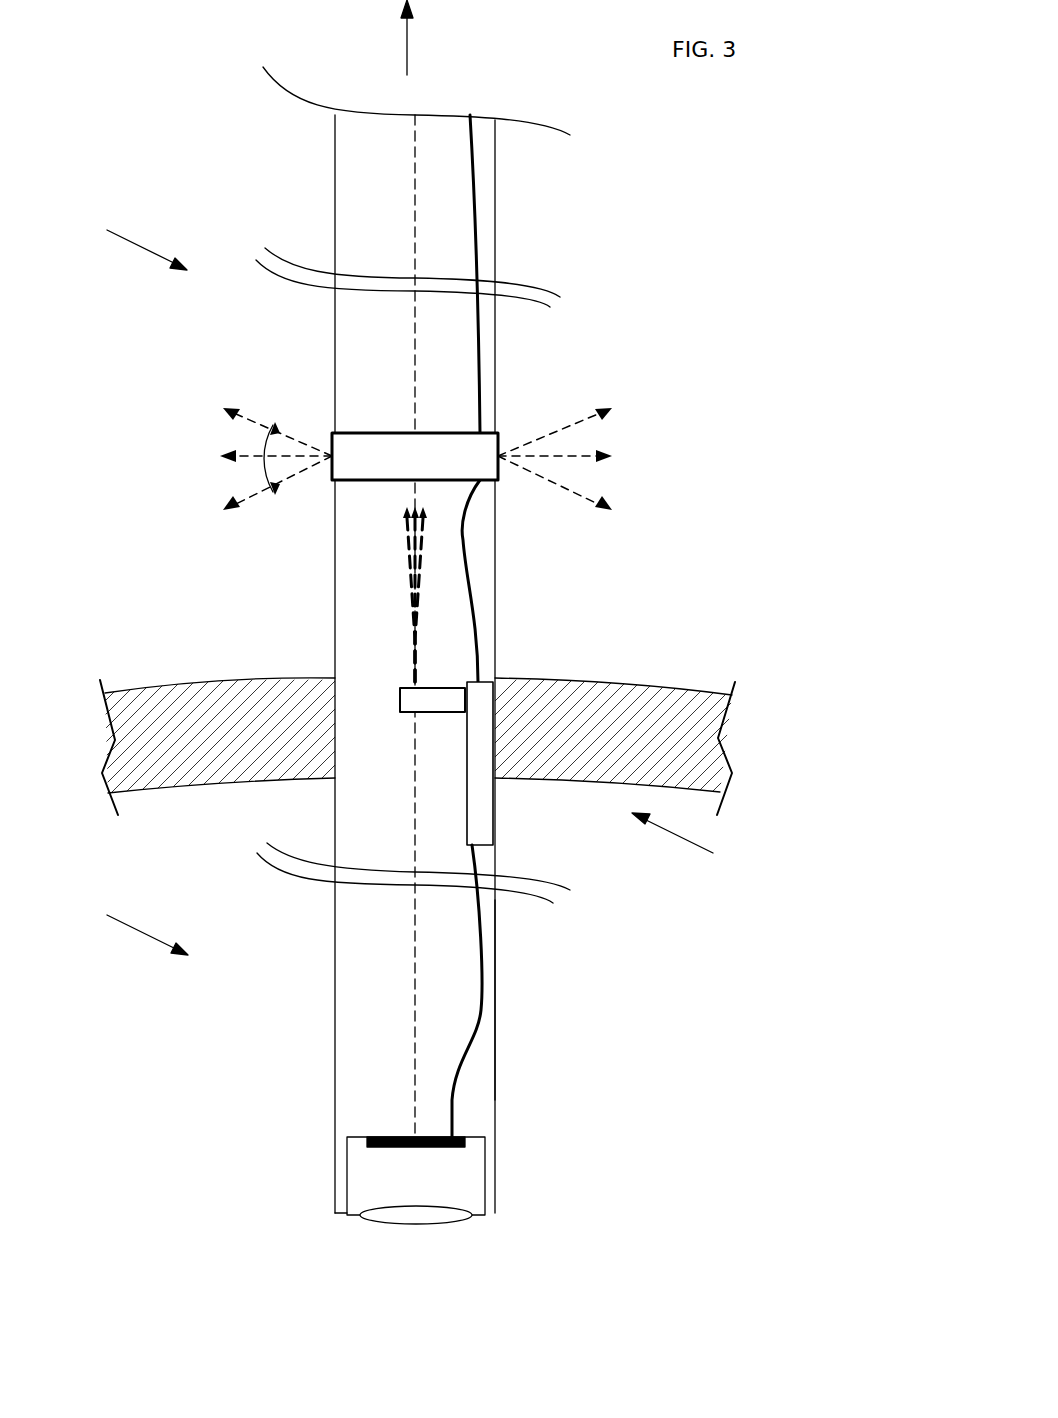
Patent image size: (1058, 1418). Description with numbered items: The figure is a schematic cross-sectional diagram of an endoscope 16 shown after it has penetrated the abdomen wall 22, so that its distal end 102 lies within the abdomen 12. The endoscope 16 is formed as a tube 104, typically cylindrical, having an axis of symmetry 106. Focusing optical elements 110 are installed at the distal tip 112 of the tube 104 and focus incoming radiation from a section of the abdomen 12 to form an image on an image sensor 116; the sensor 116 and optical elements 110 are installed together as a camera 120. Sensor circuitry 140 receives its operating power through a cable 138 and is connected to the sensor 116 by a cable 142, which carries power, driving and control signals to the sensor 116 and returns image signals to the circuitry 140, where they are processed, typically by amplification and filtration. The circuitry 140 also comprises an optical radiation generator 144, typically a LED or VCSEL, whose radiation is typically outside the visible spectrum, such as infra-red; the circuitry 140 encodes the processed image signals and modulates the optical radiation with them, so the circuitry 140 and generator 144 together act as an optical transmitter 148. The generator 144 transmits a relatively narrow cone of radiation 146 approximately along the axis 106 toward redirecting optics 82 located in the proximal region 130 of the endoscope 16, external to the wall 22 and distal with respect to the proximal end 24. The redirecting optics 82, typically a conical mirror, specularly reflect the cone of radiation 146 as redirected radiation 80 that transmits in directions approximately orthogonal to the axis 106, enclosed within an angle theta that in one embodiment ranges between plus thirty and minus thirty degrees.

The abdomen 12 is at (606, 1117).
The endoscope 16 is at (335, 346).
The abdomen wall 22 is at (653, 688).
The proximal end 24 is at (405, 52).
The redirected radiation 80 is at (250, 413).
The redirecting optics 82 is at (395, 432).
The distal end 102 is at (131, 924).
The tube 104 is at (495, 992).
The axis of symmetry 106 is at (415, 177).
The focusing optical elements 110 is at (455, 1222).
The distal tip 112 is at (338, 1215).
The image sensor 116 is at (393, 1137).
The camera 120 is at (485, 1178).
The proximal region 130 is at (128, 236).
The cable 138 is at (480, 200).
The sensor circuitry 140 is at (495, 820).
The cable 142 is at (480, 937).
The optical radiation generator 144 is at (402, 687).
The cone of radiation 146 is at (408, 560).
The optical transmitter 148 is at (695, 846).